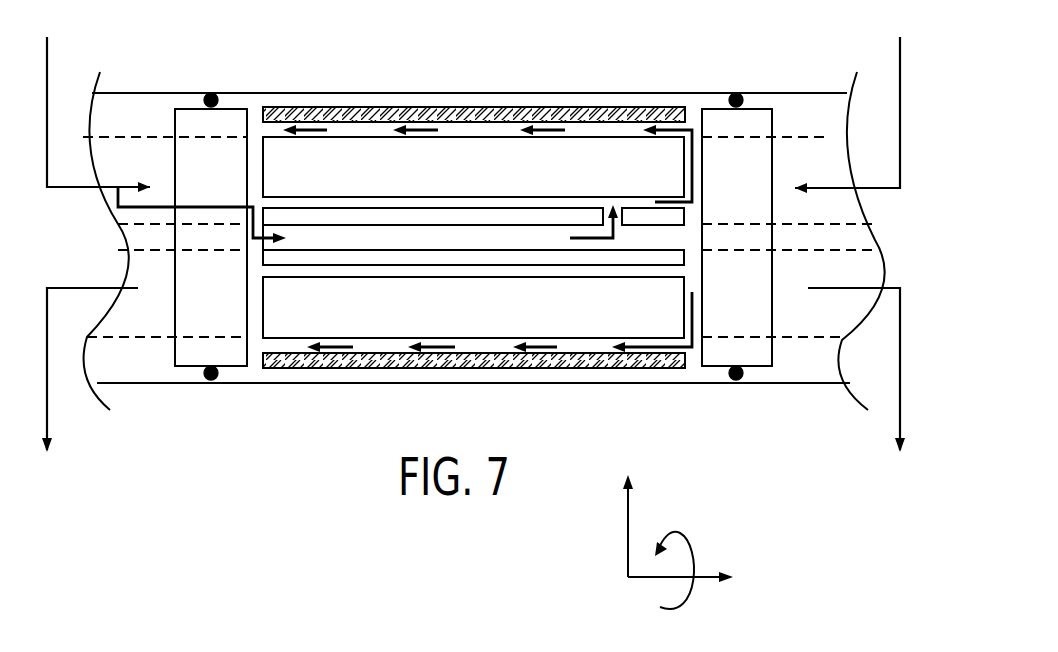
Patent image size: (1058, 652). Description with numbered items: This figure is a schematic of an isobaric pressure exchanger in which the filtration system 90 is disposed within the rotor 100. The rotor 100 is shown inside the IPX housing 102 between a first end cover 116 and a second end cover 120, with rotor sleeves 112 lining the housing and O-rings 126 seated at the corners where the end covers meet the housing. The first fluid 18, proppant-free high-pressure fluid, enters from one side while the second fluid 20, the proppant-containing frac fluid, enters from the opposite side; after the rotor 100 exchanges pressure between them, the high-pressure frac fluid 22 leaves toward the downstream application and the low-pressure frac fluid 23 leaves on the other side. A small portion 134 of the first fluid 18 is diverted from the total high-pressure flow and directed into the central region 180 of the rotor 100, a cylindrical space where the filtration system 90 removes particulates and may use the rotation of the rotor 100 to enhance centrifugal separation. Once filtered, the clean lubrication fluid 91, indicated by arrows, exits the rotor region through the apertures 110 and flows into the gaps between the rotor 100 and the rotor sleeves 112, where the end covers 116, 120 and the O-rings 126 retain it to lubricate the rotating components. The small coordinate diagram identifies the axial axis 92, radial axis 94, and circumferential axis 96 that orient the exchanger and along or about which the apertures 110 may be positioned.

The first fluid 18 is at (48, 117).
The second fluid 20 is at (900, 75).
The high-pressure frac fluid 22 is at (898, 362).
The low-pressure frac fluid 23 is at (48, 340).
The filtration system 90 is at (646, 238).
The clean lubrication fluid 91 is at (647, 352).
The axial axis 92 is at (650, 578).
The radial axis 94 is at (628, 530).
The circumferential axis 96 is at (680, 533).
The rotor 100 is at (473, 237).
The IPX housing 102 is at (280, 93).
The apertures 110 is at (604, 195).
The rotor sleeves 112 is at (450, 117).
The first end cover 116 is at (198, 347).
The second end cover 120 is at (757, 123).
The O-rings 126 is at (205, 97).
The small portion 134 is at (214, 206).
The central region 180 is at (152, 237).